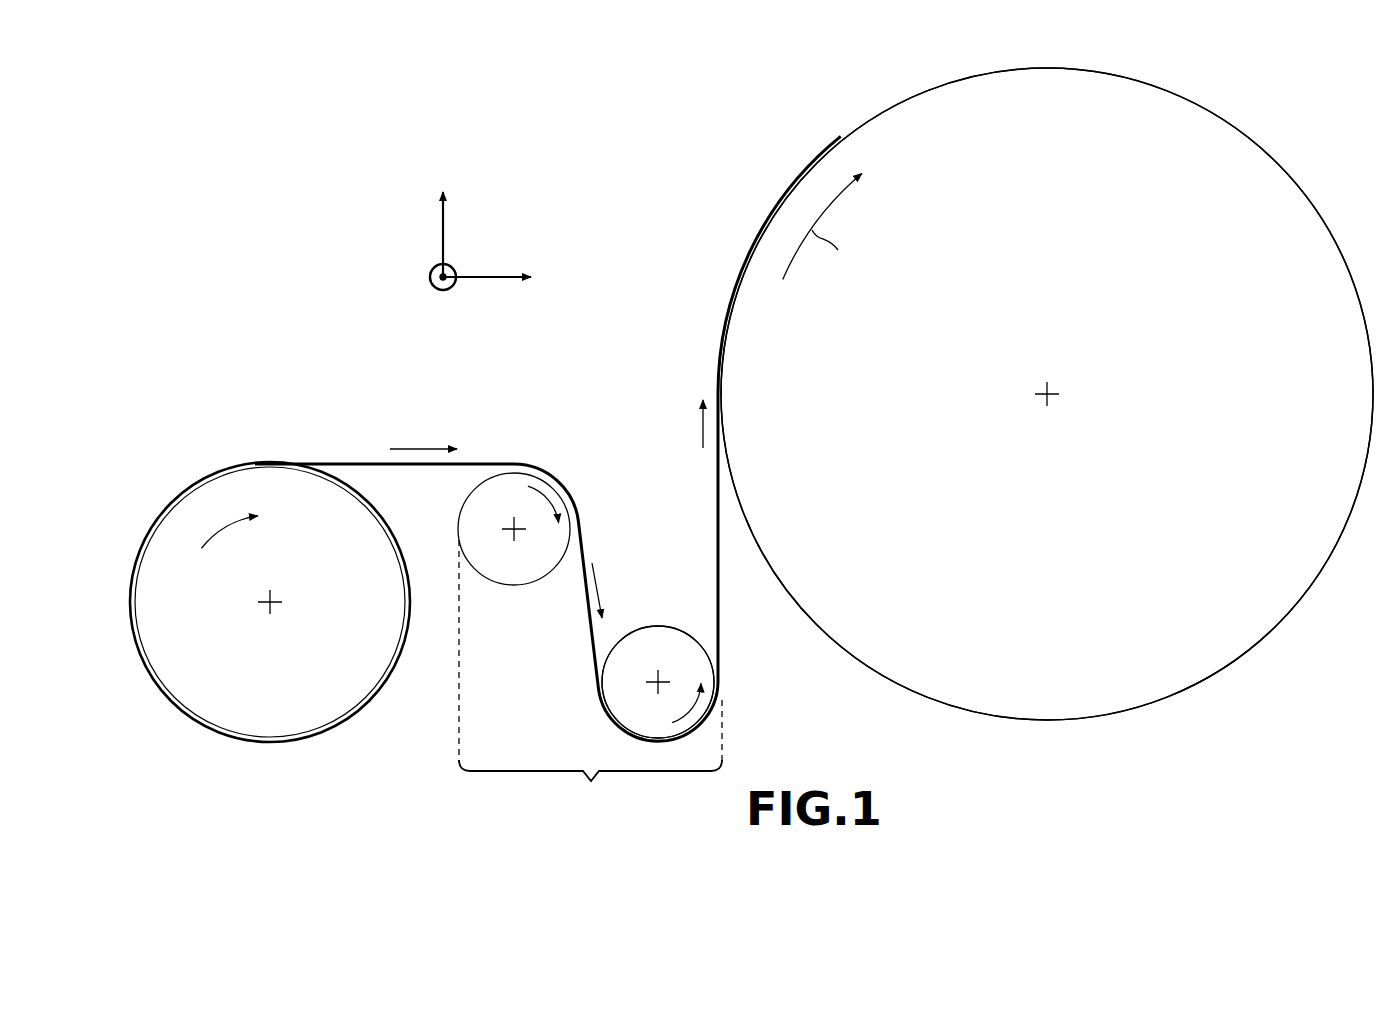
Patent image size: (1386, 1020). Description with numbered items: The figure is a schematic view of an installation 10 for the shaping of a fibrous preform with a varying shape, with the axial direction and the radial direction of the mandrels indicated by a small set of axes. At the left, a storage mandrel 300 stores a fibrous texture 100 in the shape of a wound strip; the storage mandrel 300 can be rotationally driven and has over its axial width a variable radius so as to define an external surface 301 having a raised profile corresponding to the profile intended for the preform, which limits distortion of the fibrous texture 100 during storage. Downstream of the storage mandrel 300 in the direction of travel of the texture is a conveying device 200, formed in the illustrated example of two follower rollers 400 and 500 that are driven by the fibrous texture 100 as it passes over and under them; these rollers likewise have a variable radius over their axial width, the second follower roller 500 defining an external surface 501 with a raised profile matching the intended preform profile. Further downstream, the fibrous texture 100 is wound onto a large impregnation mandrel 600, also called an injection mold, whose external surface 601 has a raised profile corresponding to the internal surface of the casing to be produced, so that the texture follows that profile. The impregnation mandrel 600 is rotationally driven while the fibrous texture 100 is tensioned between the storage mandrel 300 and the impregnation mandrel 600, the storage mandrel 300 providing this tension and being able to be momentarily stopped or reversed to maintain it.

The installation 10 is at (255, 163).
The fibrous texture 100 is at (324, 463).
The conveying device 200 is at (590, 675).
The storage mandrel 300 is at (343, 740).
The external surface 301 is at (386, 692).
The first follower roller 400 is at (524, 598).
The second follower roller 500 is at (643, 612).
The external surface 501 is at (672, 627).
The impregnation mandrel 600 is at (1257, 121).
The external surface 601 is at (907, 96).